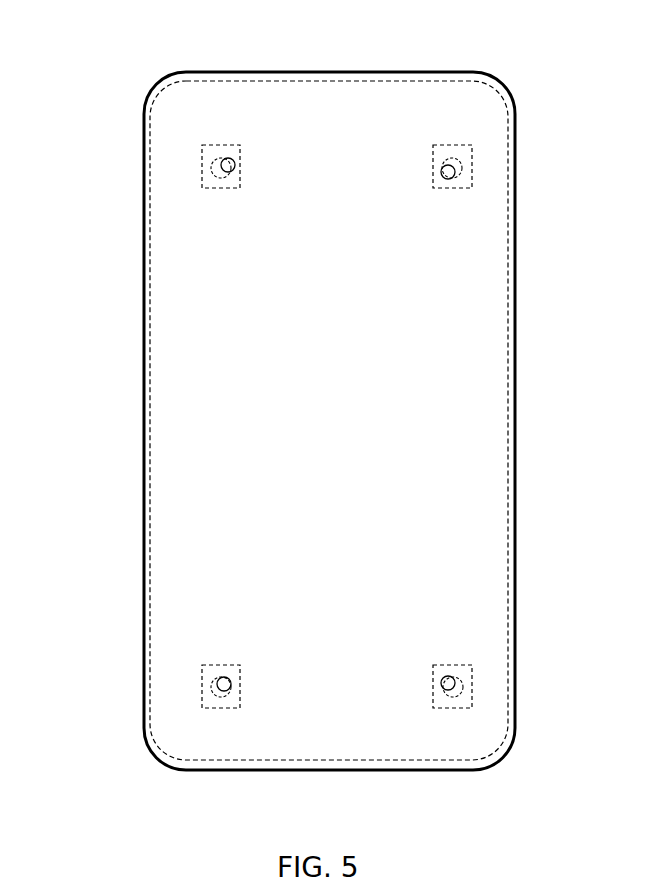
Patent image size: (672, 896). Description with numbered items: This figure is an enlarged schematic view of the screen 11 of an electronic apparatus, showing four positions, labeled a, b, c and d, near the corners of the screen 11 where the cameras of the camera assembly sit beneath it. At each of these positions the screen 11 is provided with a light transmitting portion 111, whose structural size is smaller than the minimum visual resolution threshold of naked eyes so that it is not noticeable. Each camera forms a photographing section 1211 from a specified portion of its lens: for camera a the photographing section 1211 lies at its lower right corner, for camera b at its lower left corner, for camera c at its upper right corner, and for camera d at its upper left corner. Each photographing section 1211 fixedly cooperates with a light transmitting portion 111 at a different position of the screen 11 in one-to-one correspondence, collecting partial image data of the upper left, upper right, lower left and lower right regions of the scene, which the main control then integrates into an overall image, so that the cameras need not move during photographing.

The screen 11 is at (144, 122).
The light transmitting portion 111 is at (222, 178).
The photographing section 1211 is at (225, 163).